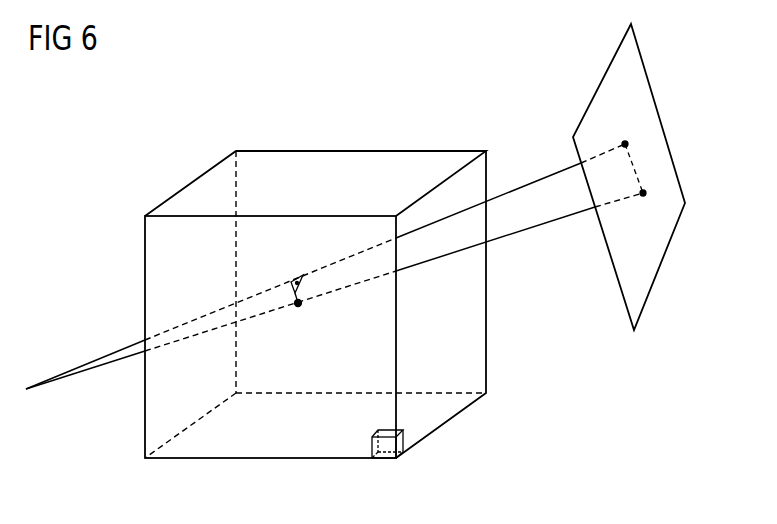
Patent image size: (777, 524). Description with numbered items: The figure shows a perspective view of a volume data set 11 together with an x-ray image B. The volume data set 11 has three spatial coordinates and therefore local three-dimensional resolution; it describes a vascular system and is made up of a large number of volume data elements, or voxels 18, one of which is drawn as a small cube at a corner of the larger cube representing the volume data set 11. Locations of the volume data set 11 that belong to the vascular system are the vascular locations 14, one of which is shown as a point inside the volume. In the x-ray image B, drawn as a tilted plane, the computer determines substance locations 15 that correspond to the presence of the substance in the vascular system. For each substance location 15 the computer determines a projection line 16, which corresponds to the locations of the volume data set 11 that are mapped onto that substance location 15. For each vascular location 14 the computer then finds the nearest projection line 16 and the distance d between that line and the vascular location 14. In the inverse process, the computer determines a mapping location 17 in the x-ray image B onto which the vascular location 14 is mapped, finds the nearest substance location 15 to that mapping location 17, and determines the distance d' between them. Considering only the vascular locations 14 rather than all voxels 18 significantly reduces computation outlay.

The volume data set 11 is at (275, 450).
The vascular location 14 is at (300, 306).
The substance location 15 is at (625, 141).
The projection line 16 is at (522, 184).
The mapping location 17 is at (643, 196).
The voxel 18 is at (383, 460).
The x-ray image B is at (640, 290).
The distance d is at (286, 306).
The distance d' is at (671, 165).